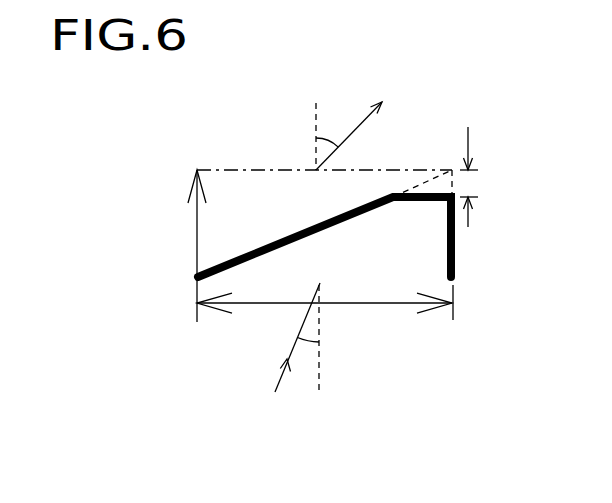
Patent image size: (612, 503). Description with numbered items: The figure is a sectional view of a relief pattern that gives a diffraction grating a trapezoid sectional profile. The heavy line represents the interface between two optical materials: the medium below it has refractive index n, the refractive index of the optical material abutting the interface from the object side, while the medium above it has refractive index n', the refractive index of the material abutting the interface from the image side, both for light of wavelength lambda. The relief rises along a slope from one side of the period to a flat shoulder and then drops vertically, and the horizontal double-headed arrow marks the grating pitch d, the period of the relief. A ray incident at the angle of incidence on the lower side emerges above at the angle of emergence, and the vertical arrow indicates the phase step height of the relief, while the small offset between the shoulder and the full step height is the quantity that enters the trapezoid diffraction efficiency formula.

The refractive index of the object-side optical material n is at (324, 237).
The refractive index of the image-side optical material n' is at (259, 212).
The grating pitch d is at (325, 309).